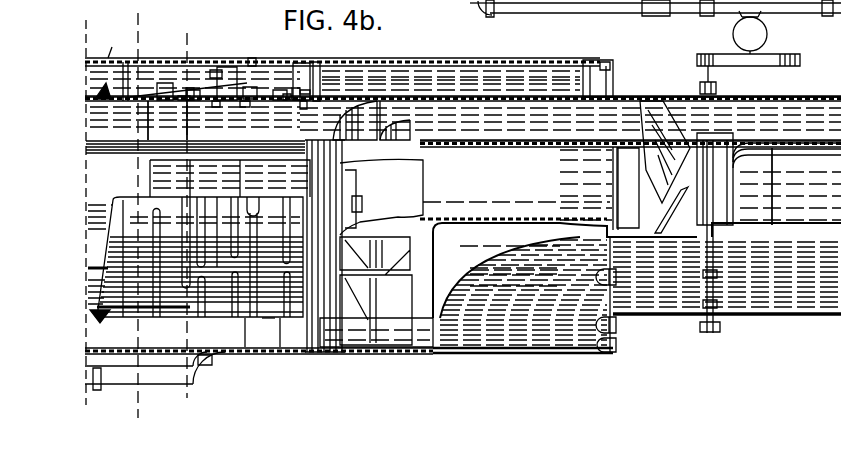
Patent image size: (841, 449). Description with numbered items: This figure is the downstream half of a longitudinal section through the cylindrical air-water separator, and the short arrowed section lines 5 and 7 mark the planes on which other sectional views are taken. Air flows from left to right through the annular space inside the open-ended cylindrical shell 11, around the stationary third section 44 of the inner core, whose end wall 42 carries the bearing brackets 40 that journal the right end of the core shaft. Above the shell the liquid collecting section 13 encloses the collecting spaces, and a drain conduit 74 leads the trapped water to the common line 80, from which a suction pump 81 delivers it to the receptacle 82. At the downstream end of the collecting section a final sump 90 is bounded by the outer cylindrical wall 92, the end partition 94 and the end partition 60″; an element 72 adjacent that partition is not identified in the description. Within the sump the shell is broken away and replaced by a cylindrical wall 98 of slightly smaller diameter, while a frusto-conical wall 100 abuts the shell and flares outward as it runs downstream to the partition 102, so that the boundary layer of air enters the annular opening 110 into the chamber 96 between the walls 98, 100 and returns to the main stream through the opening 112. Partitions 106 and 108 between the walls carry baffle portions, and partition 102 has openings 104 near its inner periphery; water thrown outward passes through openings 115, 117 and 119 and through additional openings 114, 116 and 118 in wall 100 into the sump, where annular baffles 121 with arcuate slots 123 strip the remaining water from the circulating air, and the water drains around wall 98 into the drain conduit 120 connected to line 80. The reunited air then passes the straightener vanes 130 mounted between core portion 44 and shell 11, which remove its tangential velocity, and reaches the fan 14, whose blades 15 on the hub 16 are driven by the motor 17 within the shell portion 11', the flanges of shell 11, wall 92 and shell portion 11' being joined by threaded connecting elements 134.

The section line 5- 5 is at (175, 414).
The section line 7- 7 is at (225, 394).
The cylindrical shell 11 is at (463, 84).
The shell portion 11' is at (712, 79).
The liquid collecting section 13 is at (426, 60).
The fan 14 is at (740, 137).
The blades 15 is at (637, 125).
The hub 16 is at (692, 152).
The motor 17 is at (815, 147).
The bearing brackets 40 is at (352, 188).
The end wall 42 is at (365, 172).
The third section of inner core 44 is at (490, 140).
The end partition 60 is at (108, 58).
The wedge 72 is at (106, 83).
The drain conduit 74 is at (460, 5).
The common line 80 is at (724, 14).
The suction pump 81 is at (733, 43).
The receptacle 82 is at (785, 56).
The sump 90 is at (252, 58).
The outer cylindrical wall 92 is at (251, 350).
The end partition 94 is at (281, 348).
The chamber 96 is at (216, 105).
The cylindrical wall 98 is at (286, 95).
The frusto-conical wall 100 is at (268, 322).
The partition 102 is at (303, 96).
The openings 104 is at (304, 92).
The partition 106 is at (246, 105).
The partition 108 is at (190, 110).
The annular opening 110 is at (150, 108).
The opening 112 is at (304, 105).
The opening 114 is at (155, 212).
The opening 115 is at (186, 96).
The opening 116 is at (202, 214).
The opening 117 is at (228, 68).
The opening 118 is at (253, 212).
The opening 119 is at (296, 88).
The drain conduit 120 is at (198, 360).
The annular baffles 121 is at (213, 70).
The arcuate slots 123 is at (190, 88).
The straightener vanes 130 is at (398, 282).
The threaded connecting elements 134 is at (612, 350).